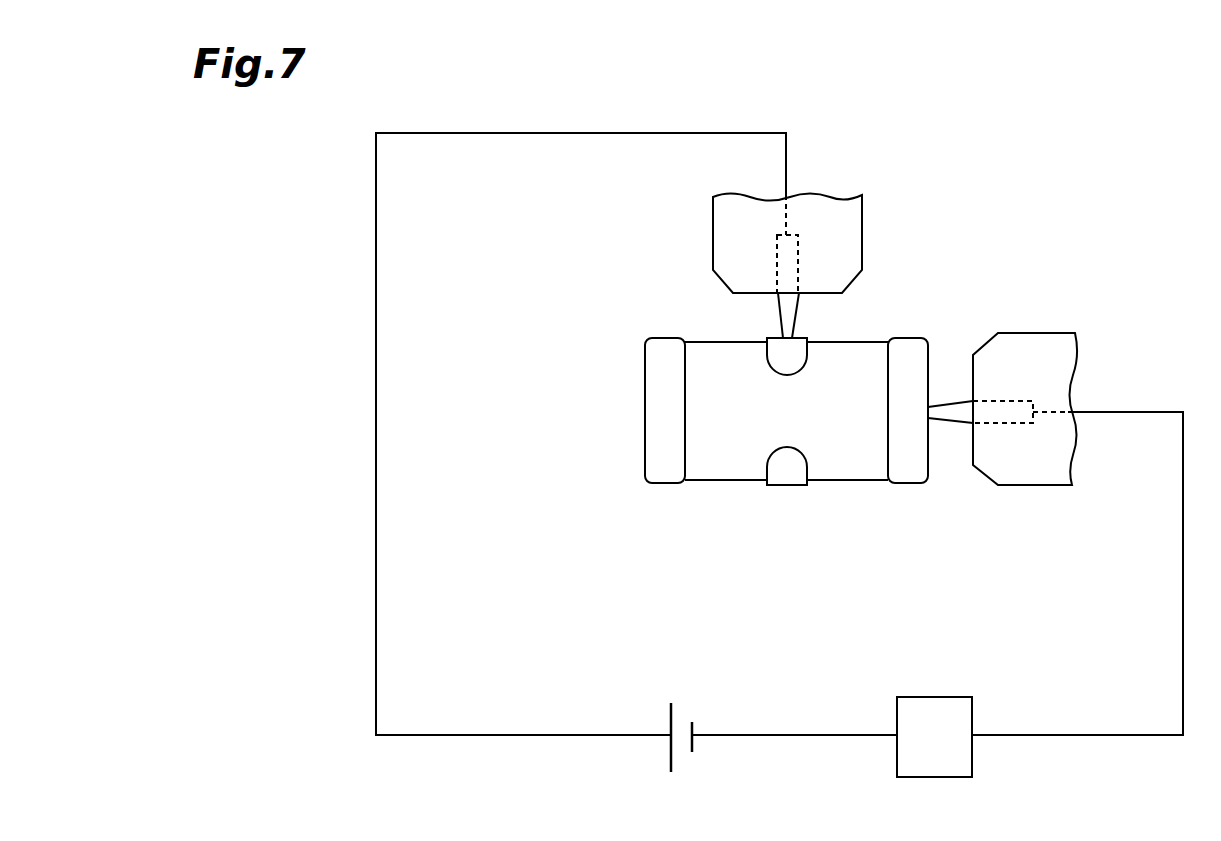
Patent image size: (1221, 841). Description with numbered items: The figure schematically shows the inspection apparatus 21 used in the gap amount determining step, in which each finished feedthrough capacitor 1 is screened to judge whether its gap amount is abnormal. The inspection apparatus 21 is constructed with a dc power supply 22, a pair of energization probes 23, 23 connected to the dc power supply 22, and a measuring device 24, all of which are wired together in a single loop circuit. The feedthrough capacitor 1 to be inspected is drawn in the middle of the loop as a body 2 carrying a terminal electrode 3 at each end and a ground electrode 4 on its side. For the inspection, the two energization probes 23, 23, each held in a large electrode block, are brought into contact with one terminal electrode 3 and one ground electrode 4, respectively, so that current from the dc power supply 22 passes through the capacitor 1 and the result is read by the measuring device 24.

The feedthrough capacitor 1 is at (756, 372).
The battery body 2 is at (712, 470).
The terminal electrode 3 is at (665, 352).
The ground electrode 4 is at (776, 343).
The inspection apparatus 21 is at (895, 346).
The dc power supply 22 is at (681, 693).
The energization probe 23 is at (788, 318).
The measuring device 24 is at (938, 697).